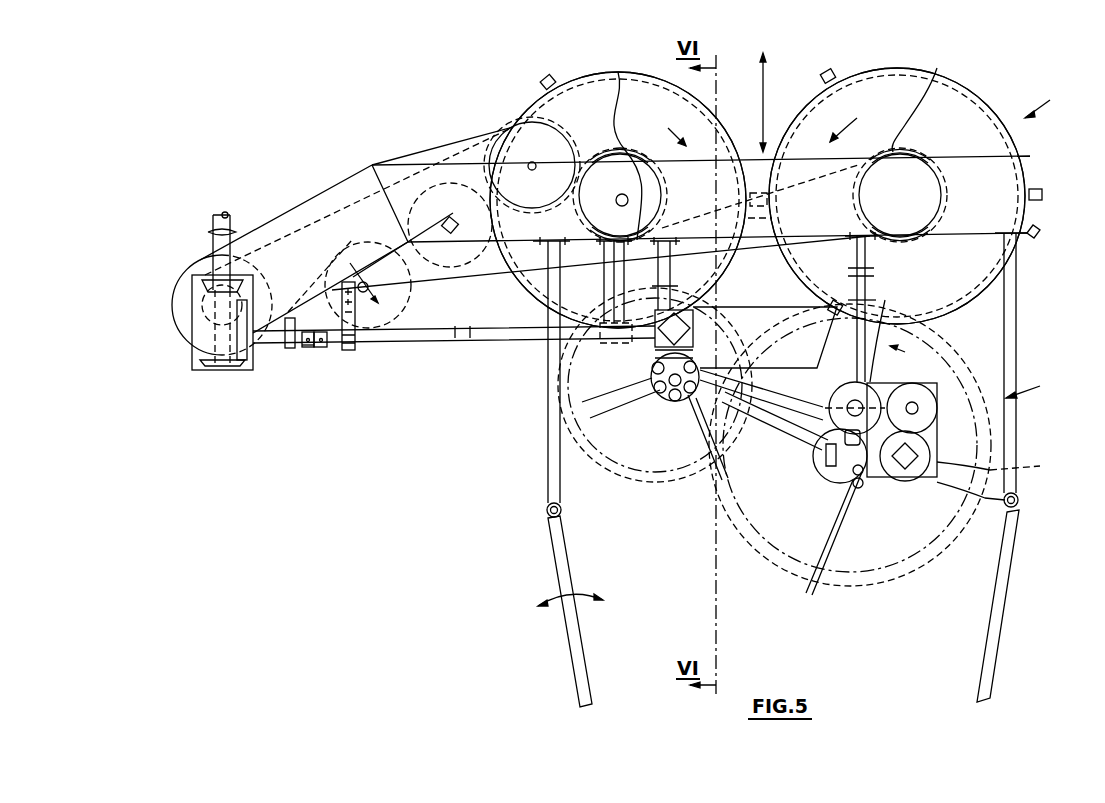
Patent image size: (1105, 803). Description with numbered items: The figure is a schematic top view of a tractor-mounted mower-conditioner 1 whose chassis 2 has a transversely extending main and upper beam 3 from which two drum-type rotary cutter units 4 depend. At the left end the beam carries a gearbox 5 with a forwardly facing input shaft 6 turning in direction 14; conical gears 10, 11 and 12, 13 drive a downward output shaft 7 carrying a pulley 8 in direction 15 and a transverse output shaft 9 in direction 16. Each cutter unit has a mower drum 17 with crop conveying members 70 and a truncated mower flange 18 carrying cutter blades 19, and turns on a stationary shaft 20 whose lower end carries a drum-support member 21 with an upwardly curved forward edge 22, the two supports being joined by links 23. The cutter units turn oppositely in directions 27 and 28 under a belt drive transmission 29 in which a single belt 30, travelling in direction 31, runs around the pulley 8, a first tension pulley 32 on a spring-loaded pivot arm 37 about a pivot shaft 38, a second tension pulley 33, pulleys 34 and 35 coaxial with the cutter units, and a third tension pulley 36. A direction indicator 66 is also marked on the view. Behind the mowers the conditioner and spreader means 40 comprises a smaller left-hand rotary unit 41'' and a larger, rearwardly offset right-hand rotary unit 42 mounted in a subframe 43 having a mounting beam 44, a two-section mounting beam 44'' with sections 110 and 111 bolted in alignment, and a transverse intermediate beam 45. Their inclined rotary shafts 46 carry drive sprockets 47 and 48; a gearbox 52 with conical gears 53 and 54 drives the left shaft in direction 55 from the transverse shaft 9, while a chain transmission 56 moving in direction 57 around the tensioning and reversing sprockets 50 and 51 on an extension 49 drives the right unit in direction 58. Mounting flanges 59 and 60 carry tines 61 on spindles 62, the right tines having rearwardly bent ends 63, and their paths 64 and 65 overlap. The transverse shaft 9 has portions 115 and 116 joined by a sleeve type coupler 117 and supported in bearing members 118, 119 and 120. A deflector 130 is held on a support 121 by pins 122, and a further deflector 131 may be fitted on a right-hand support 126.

The mower-conditioner 1 is at (1042, 110).
The chassis 2 is at (769, 105).
The main and upper beam 3 is at (757, 192).
The rotary cutter unit 4 is at (727, 102).
The gearbox 5 is at (192, 360).
The input shaft 6 is at (206, 236).
The output shaft 7 is at (202, 355).
The pulley 8 is at (176, 290).
The transverse output shaft 9 is at (306, 348).
The conical gear 10 is at (204, 282).
The conical gear 11 is at (204, 302).
The conical gear 12 is at (242, 362).
The conical gear 13 is at (287, 348).
The direction of movement of the input shaft 14 is at (230, 230).
The direction of rotation of output shaft 15 is at (325, 270).
The direction of rotation of transverse output shaft 16 is at (470, 340).
The mower drum 17 is at (781, 142).
The mower flange 18 is at (628, 77).
The cutter blade 19 is at (553, 80).
The stationary shaft 20 is at (622, 207).
The stationary drum-support member 21 is at (726, 118).
The forward edge 22 is at (524, 128).
The link 23 is at (837, 302).
The direction of rotation 27 is at (685, 131).
The direction of rotation 28 is at (837, 126).
The belt drive transmission 29 is at (478, 140).
The belt 30 is at (450, 162).
The direction of rotation of belt 31 is at (320, 275).
The first tension pulley 32 is at (428, 334).
The second tension pulley 33 is at (485, 260).
The pulley 34 is at (1031, 236).
The pulley 35 is at (666, 186).
The third tension pulley 36 is at (577, 200).
The pivot arm 37 is at (385, 280).
The pivot shaft 38 is at (452, 240).
The conditioner and spreader means 40 is at (1035, 383).
The left-hand rotary unit 41'' is at (655, 412).
The right-hand rotary unit 42 is at (902, 594).
The subframe 43 is at (882, 362).
The mounting beam 44 is at (883, 301).
The mounting beam 44'' is at (633, 189).
The transverse intermediate beam 45 is at (772, 422).
The rotary shaft 46 is at (638, 410).
The drive sprocket 47 is at (655, 346).
The drive sprocket 48 is at (845, 394).
The extension 49 is at (937, 452).
The tensioning and reversing sprocket 50 is at (937, 398).
The tensioning and reversing sprocket 51 is at (937, 430).
The gearbox 52 is at (694, 318).
The conical gear 53 is at (656, 362).
The conical gear 54 is at (694, 336).
The direction of rotation 55 is at (776, 307).
The chain transmission 56 is at (708, 434).
The direction of movement of chain 57 is at (791, 398).
The direction of rotation 58 is at (907, 348).
The mounting flange 59 is at (664, 395).
The mounting flange 60 is at (678, 402).
The conditioning and spreading tine 61 is at (632, 398).
The mounting spindle 62 is at (818, 468).
The extreme end of tine 63 is at (806, 601).
The path of tine ends 64 is at (608, 456).
The path of tine ends 65 is at (776, 566).
The direction arrow 66 is at (766, 75).
The crop conveying member 70 is at (600, 160).
The mounting beam section 110 is at (673, 258).
The mounting beam section 111 is at (705, 285).
The shaft portion 115 is at (308, 348).
The shaft portion 116 is at (455, 340).
The sleeve type coupler 117 is at (352, 350).
The bearing member 118 is at (320, 348).
The bearing member 119 is at (355, 345).
The bearing member 120 is at (548, 380).
The support 121 is at (548, 437).
The pin 122 is at (547, 511).
The right-hand support 126 is at (1017, 345).
The deflector 130 is at (572, 648).
The further deflector 131 is at (1000, 601).